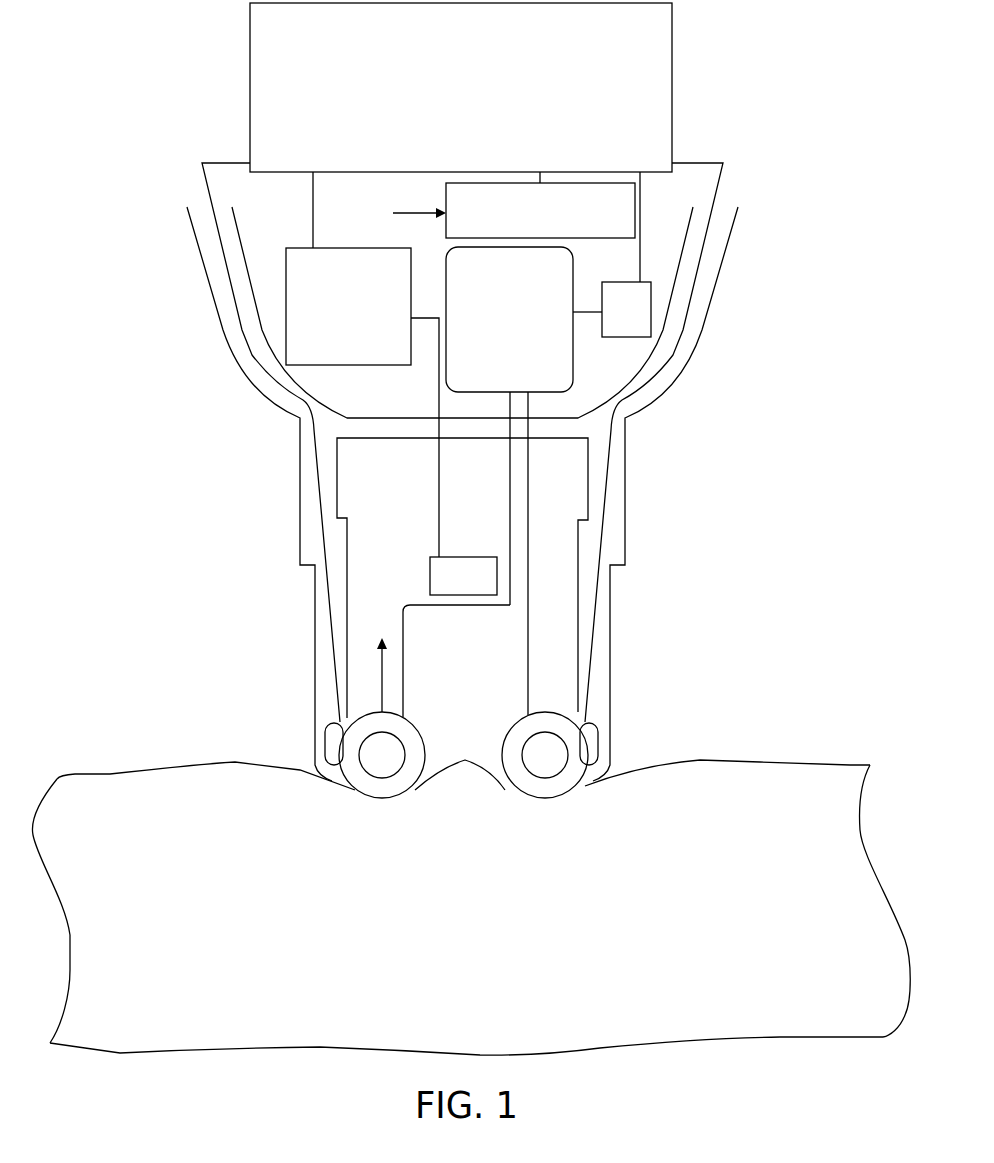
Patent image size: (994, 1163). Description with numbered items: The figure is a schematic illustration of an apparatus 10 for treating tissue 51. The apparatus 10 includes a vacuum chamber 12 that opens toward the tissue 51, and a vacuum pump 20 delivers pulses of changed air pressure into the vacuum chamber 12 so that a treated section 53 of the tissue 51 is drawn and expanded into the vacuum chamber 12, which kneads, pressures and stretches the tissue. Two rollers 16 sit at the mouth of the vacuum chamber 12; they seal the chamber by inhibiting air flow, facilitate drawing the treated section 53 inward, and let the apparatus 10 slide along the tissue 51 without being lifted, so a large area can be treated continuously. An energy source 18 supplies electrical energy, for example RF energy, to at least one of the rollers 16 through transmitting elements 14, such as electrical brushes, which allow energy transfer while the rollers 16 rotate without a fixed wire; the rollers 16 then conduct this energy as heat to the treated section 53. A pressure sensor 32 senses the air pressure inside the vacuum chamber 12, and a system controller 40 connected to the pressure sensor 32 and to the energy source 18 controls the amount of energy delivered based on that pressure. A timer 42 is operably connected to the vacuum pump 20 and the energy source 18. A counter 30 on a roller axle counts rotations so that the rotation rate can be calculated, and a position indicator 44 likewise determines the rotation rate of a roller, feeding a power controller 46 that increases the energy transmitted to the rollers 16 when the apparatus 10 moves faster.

The apparatus 10 is at (820, 100).
The vacuum chamber 12 is at (515, 620).
The transmitting elements 14 is at (332, 735).
The rollers 16 is at (464, 790).
The energy source 18 is at (672, 62).
The vacuum pump 20 is at (560, 376).
The counter 30 is at (566, 757).
The pressure sensor 32 is at (478, 556).
The system controller 40 is at (298, 342).
The timer 42 is at (640, 318).
The position indicator 44 is at (358, 757).
The power controller 46 is at (635, 198).
The tissue 51 is at (106, 790).
The treated section 53 is at (465, 760).